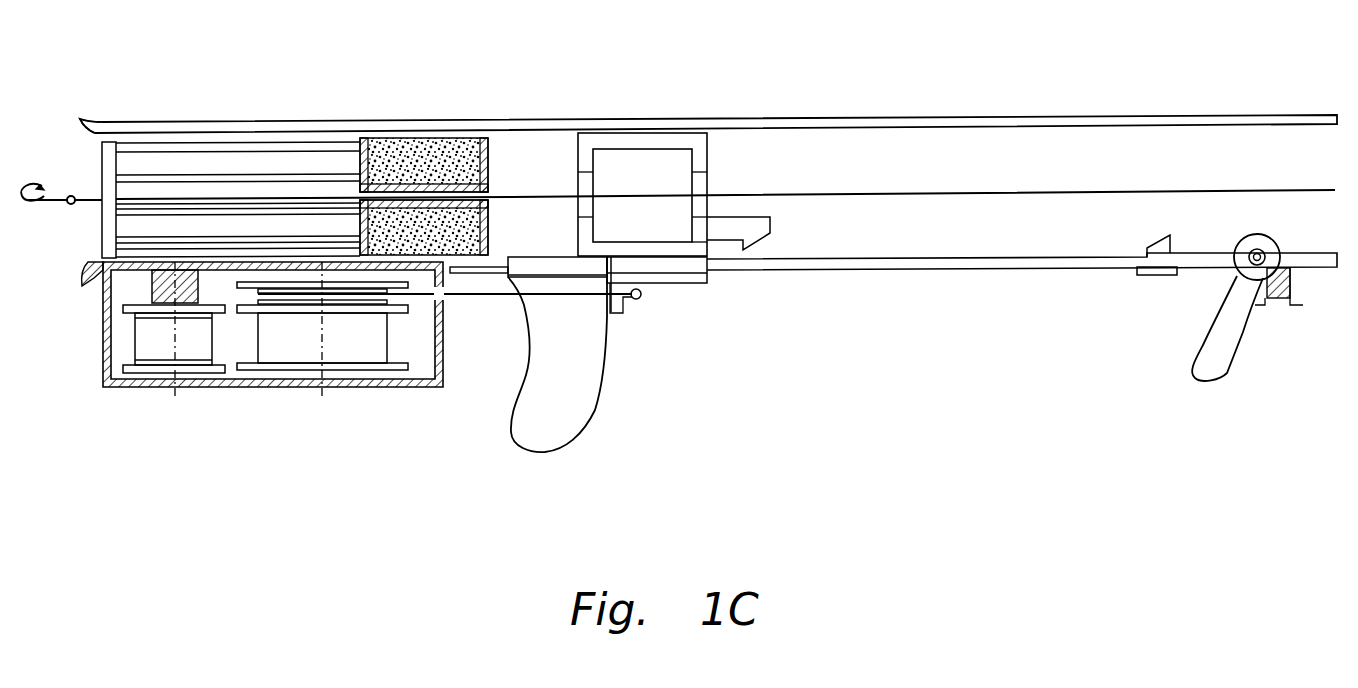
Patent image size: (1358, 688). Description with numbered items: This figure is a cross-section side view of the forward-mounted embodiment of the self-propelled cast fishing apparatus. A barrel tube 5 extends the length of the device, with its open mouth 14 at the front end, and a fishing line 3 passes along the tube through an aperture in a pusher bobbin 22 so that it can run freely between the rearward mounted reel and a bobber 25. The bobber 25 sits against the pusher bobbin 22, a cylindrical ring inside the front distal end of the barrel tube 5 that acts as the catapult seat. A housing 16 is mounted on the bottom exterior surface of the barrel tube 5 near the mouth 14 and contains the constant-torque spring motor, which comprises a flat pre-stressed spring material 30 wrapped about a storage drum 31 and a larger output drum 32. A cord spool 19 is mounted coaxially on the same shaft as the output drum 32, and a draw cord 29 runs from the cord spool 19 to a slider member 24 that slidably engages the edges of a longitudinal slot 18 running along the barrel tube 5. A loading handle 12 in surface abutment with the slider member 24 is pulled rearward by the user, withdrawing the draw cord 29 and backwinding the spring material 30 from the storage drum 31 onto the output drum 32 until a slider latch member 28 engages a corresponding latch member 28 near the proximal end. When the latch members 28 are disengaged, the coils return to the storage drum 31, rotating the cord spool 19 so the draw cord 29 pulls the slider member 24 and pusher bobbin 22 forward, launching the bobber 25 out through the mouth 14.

The fishing line 3 is at (518, 197).
The barrel tube 5 is at (898, 117).
The loading handle 12 is at (600, 405).
The mouth 14 is at (84, 120).
The housing 16 is at (393, 388).
The longitudinal slot 18 is at (888, 272).
The cord spool 19 is at (441, 350).
The pusher bobbin 22 is at (628, 142).
The slider member 24 is at (673, 283).
The bobber 25 is at (420, 140).
The latch member 28 is at (770, 240).
The draw cord 29 is at (497, 300).
The spring material 30 is at (232, 340).
The storage drum 31 is at (158, 355).
The output drum 32 is at (327, 355).